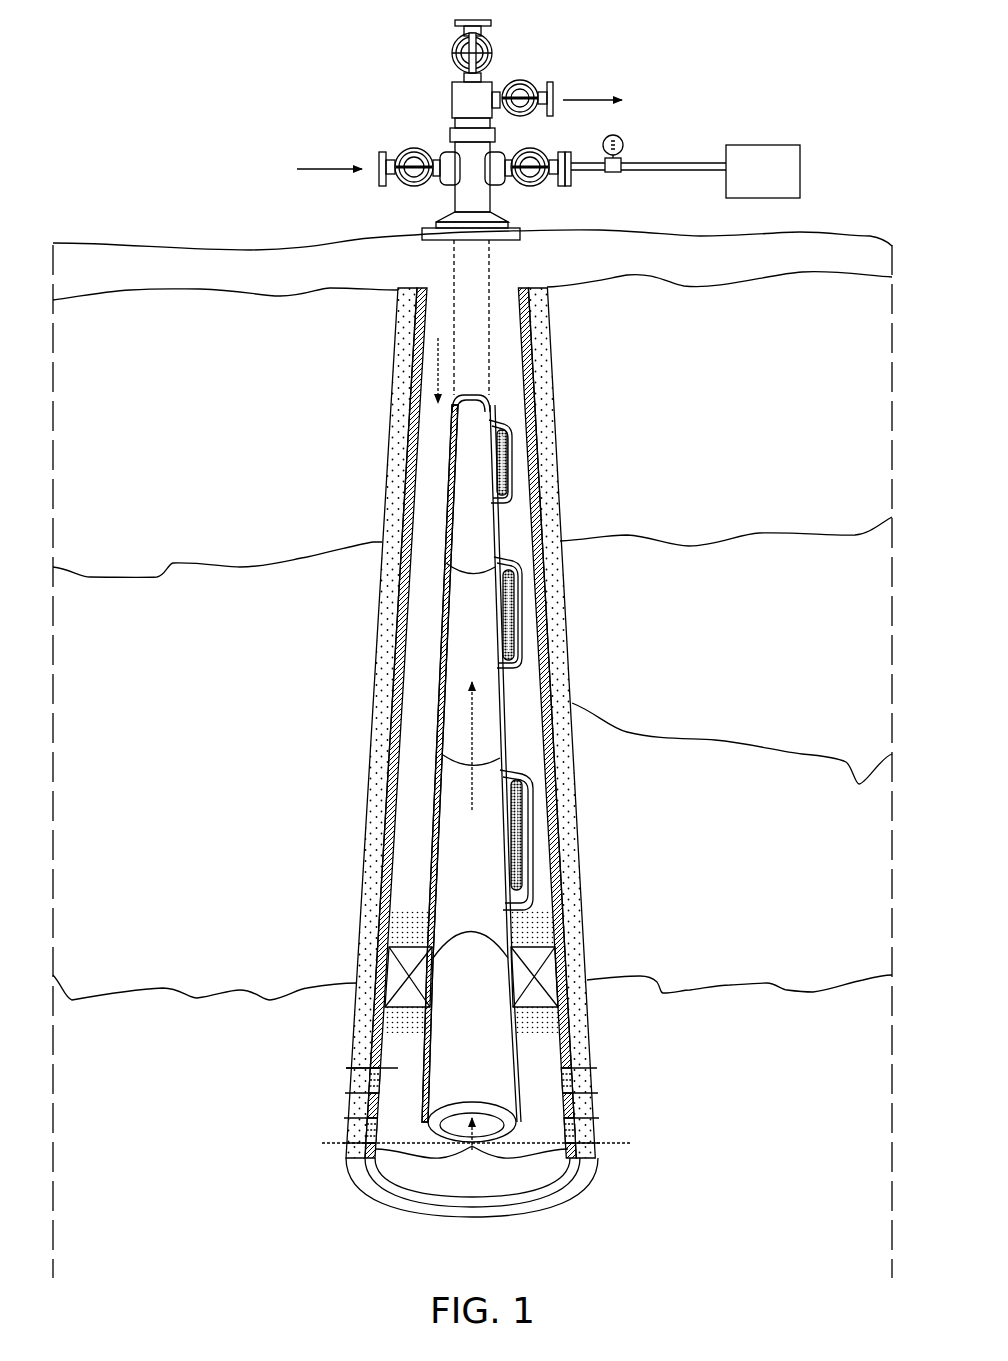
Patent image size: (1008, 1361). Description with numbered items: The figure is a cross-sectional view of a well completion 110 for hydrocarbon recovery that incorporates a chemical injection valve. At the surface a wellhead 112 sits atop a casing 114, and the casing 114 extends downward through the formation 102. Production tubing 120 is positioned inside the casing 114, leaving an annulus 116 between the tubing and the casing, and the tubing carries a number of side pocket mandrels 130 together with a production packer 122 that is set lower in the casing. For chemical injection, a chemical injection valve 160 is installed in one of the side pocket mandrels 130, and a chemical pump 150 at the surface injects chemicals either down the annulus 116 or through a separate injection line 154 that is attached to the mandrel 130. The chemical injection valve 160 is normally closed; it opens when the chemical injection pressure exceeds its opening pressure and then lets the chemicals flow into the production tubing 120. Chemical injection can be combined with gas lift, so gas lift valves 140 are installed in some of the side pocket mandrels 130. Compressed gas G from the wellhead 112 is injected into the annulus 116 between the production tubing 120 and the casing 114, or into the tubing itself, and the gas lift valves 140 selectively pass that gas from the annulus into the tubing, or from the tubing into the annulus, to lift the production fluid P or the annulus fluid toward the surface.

The formation 102 is at (778, 1161).
The well completion 110 is at (686, 42).
The wellhead 112 is at (452, 98).
The casing 114 is at (397, 608).
The annulus 116 is at (437, 498).
The production tubing 120 is at (468, 370).
The production packer 122 is at (537, 997).
The side pocket mandrel 130 is at (550, 592).
The gas lift valve 140 is at (509, 592).
The chemical pump 150 is at (800, 158).
The injection line 154 is at (478, 383).
The chemical injection valve 160 is at (527, 827).
The compressed gas G is at (438, 362).
The production fluid P is at (470, 715).